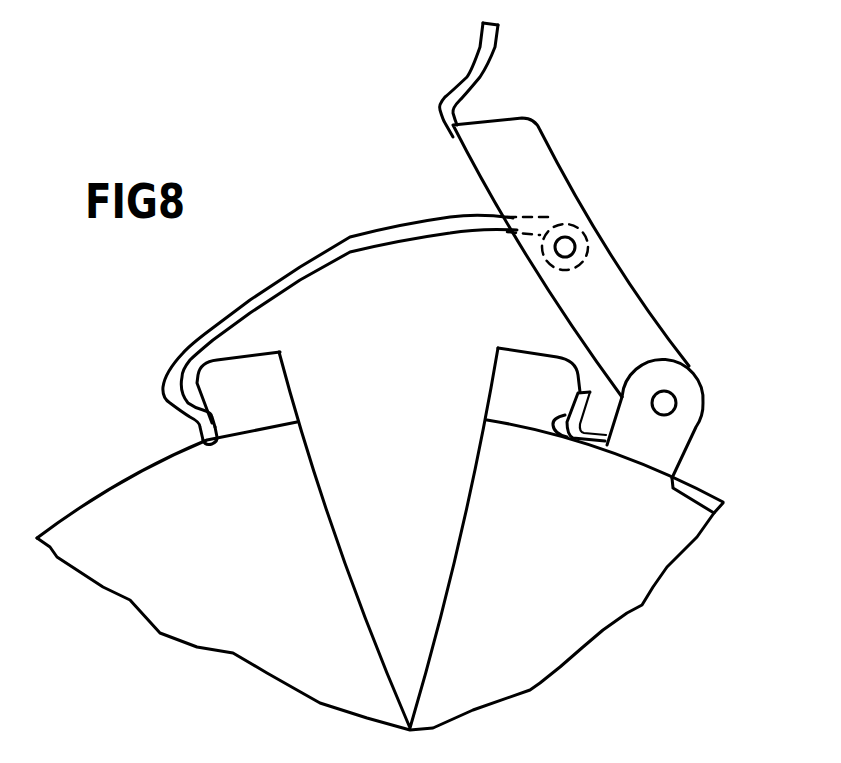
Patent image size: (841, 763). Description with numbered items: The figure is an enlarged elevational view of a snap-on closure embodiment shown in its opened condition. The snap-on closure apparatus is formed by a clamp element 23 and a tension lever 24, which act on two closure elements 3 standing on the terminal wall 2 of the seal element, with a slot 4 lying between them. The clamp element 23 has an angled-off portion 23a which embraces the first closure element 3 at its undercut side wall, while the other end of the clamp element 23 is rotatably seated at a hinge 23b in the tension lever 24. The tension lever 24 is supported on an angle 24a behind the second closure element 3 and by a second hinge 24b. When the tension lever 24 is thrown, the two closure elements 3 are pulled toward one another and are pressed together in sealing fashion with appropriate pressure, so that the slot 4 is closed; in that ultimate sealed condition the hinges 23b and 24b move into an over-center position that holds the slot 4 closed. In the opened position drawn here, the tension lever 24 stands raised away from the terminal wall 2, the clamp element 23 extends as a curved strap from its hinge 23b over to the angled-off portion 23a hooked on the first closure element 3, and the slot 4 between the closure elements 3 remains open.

The terminal wall 2 is at (625, 605).
The closure element 3 is at (272, 395).
The slot 4 is at (430, 560).
The clamp element 23 is at (354, 240).
The angled-off portion 23a is at (193, 427).
The hinge 23b is at (590, 243).
The tension lever 24 is at (557, 198).
The angle 24a is at (556, 439).
The second hinge 24b is at (683, 435).